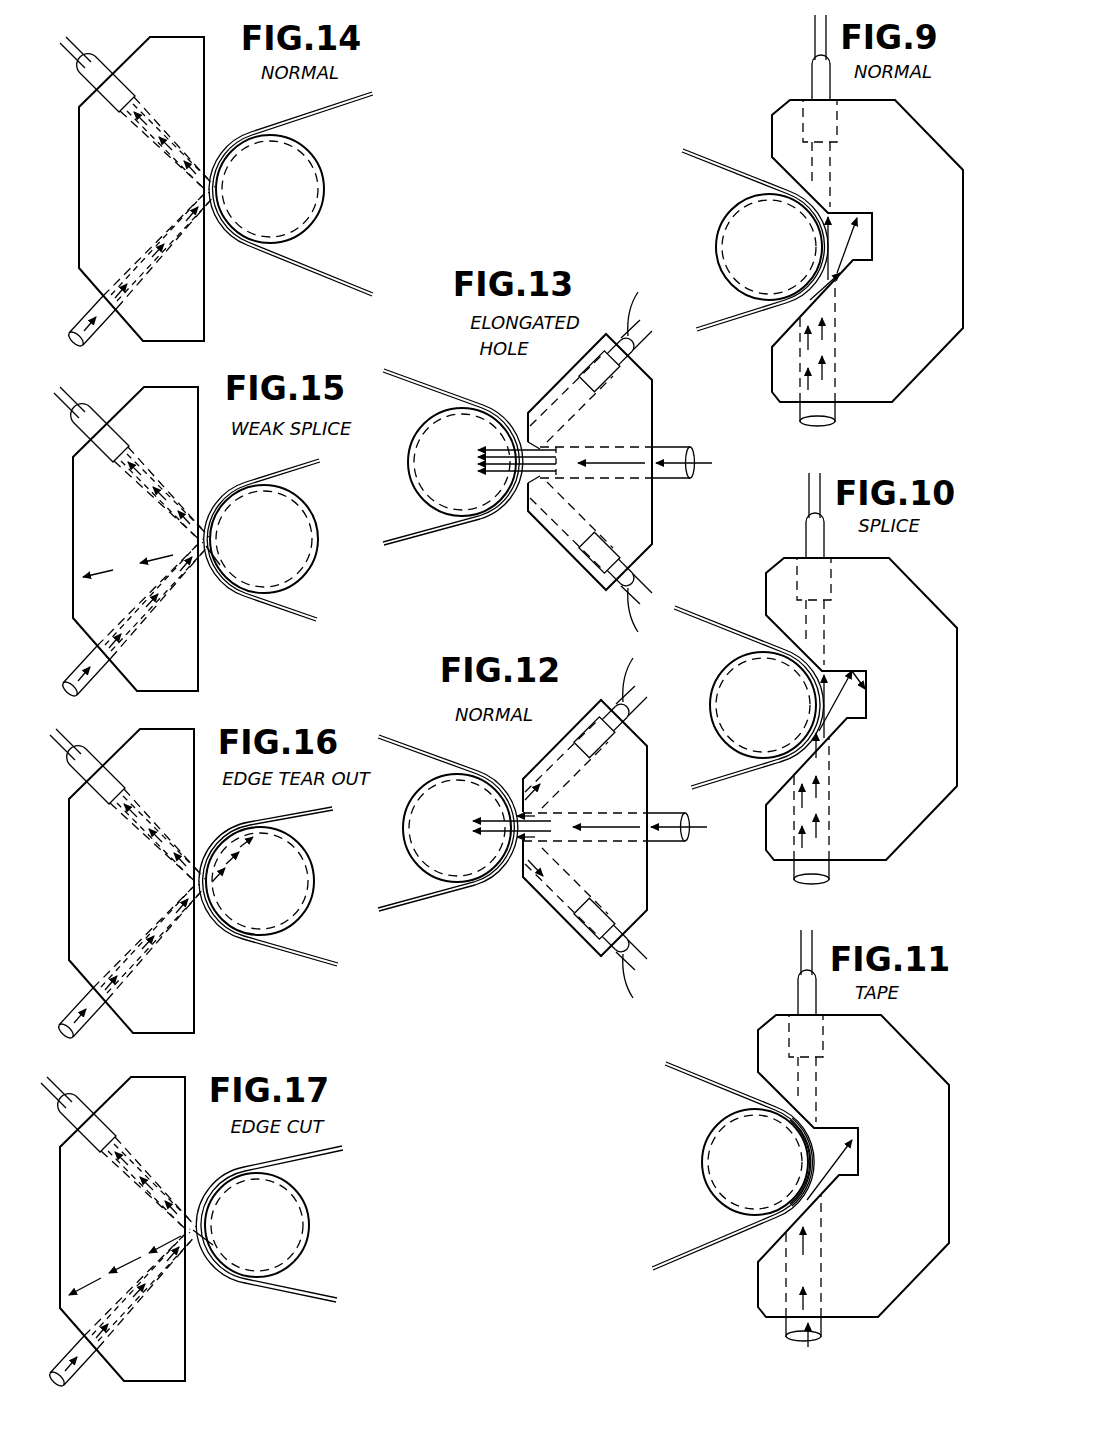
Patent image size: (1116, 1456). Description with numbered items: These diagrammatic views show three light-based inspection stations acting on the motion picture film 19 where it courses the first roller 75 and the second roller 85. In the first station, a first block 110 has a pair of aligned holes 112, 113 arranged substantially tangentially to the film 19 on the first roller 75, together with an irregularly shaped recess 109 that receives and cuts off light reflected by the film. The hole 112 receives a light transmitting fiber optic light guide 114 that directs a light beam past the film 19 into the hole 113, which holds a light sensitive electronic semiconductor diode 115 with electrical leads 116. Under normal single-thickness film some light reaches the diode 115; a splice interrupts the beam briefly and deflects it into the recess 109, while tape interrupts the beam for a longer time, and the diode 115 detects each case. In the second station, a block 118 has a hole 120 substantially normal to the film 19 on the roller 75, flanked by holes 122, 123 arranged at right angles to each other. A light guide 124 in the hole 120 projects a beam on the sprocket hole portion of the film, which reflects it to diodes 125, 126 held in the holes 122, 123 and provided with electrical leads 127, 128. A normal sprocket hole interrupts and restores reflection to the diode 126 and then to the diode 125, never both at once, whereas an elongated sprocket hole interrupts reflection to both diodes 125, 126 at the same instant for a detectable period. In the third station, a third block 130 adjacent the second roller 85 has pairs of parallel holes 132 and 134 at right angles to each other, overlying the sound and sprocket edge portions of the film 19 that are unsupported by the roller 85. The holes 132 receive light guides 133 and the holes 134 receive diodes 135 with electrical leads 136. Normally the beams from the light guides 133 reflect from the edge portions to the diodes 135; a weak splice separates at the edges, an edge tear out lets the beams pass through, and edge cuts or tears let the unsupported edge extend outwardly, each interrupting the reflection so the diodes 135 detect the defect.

In FIG. 14, the motion picture film 19 is at (357, 100).
In FIG. 15, the motion picture film 19 is at (271, 540).
In FIG. 16, the motion picture film 19 is at (288, 883).
In FIG. 17, the motion picture film 19 is at (283, 1224).
In FIG. 13, the motion picture film 19 is at (438, 388).
In FIG. 12, the motion picture film 19 is at (448, 810).
In FIG. 9, the motion picture film 19 is at (726, 168).
In FIG. 10, the motion picture film 19 is at (749, 686).
In FIG. 11, the motion picture film 19 is at (733, 1149).
In FIG. 13, the first roller 75 is at (425, 467).
In FIG. 12, the first roller 75 is at (438, 828).
In FIG. 9, the first roller 75 is at (735, 238).
In FIG. 10, the first roller 75 is at (744, 705).
In FIG. 11, the first roller 75 is at (729, 1162).
In FIG. 14, the second roller 85 is at (307, 172).
In FIG. 15, the second roller 85 is at (281, 539).
In FIG. 16, the second roller 85 is at (284, 881).
In FIG. 17, the second roller 85 is at (284, 1225).
In FIG. 9, the recess 109 is at (875, 229).
In FIG. 10, the recess 109 is at (875, 704).
In FIG. 11, the recess 109 is at (867, 1151).
In FIG. 9, the first block 110 is at (912, 128).
In FIG. 10, the first block 110 is at (865, 709).
In FIG. 11, the first block 110 is at (856, 1165).
In FIG. 9, the hole 112 is at (835, 352).
In FIG. 9, the hole 113 is at (833, 153).
In FIG. 9, the light transmitting fiber optic light guide 114 is at (820, 403).
In FIG. 10, the light transmitting fiber optic light guide 114 is at (839, 874).
In FIG. 11, the light transmitting fiber optic light guide 114 is at (833, 1334).
In FIG. 9, the light sensitive electronic semiconductor diode 115 is at (812, 80).
In FIG. 10, the light sensitive electronic semiconductor diode 115 is at (781, 535).
In FIG. 11, the light sensitive electronic semiconductor diode 115 is at (772, 992).
In FIG. 9, the electrical leads 116 is at (811, 32).
In FIG. 10, the electrical leads 116 is at (781, 495).
In FIG. 11, the electrical leads 116 is at (770, 952).
In FIG. 13, the block 118 is at (651, 422).
In FIG. 12, the block 118 is at (609, 828).
In FIG. 13, the hole 120 is at (592, 448).
In FIG. 12, the hole 120 is at (560, 806).
In FIG. 13, the hole 122 is at (557, 532).
In FIG. 12, the hole 122 is at (553, 892).
In FIG. 13, the hole 123 is at (555, 395).
In FIG. 12, the hole 123 is at (555, 764).
In FIG. 13, the light transmitting fiber optic light guide 124 is at (680, 448).
In FIG. 12, the light transmitting fiber optic light guide 124 is at (647, 816).
In FIG. 13, the light sensitive electronic semiconductor diode 125 is at (618, 590).
In FIG. 12, the light sensitive electronic semiconductor diode 125 is at (598, 954).
In FIG. 13, the light sensitive electronic semiconductor diode 126 is at (622, 342).
In FIG. 12, the light sensitive electronic semiconductor diode 126 is at (600, 709).
In FIG. 13, the electrical leads 127 is at (637, 590).
In FIG. 12, the electrical leads 127 is at (657, 969).
In FIG. 13, the electrical leads 128 is at (640, 322).
In FIG. 12, the electrical leads 128 is at (635, 678).
In FIG. 14, the third block 130 is at (190, 291).
In FIG. 15, the third block 130 is at (160, 539).
In FIG. 16, the third block 130 is at (156, 881).
In FIG. 17, the third block 130 is at (147, 1229).
In FIG. 14, the holes 132 is at (140, 292).
In FIG. 15, the holes 132 is at (154, 612).
In FIG. 16, the holes 132 is at (150, 954).
In FIG. 17, the holes 132 is at (141, 1302).
In FIG. 14, the light transmitting fiber optic light guide 133 is at (80, 313).
In FIG. 15, the light transmitting fiber optic light guide 133 is at (124, 618).
In FIG. 16, the light transmitting fiber optic light guide 133 is at (120, 960).
In FIG. 17, the light transmitting fiber optic light guide 133 is at (111, 1308).
In FIG. 14, the holes 134 is at (158, 157).
In FIG. 15, the holes 134 is at (149, 496).
In FIG. 16, the holes 134 is at (145, 838).
In FIG. 17, the holes 134 is at (136, 1186).
In FIG. 14, the light sensitive electronic semiconductor diode 135 is at (157, 143).
In FIG. 15, the light sensitive electronic semiconductor diode 135 is at (149, 495).
In FIG. 16, the light sensitive electronic semiconductor diode 135 is at (145, 837).
In FIG. 17, the light sensitive electronic semiconductor diode 135 is at (136, 1185).
In FIG. 14, the electrical leads 136 is at (98, 52).
In FIG. 15, the electrical leads 136 is at (92, 409).
In FIG. 16, the electrical leads 136 is at (88, 751).
In FIG. 17, the electrical leads 136 is at (79, 1099).